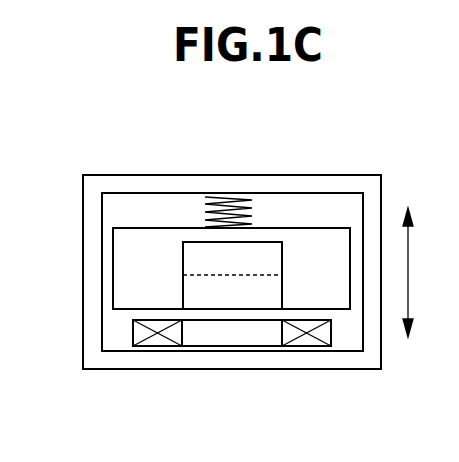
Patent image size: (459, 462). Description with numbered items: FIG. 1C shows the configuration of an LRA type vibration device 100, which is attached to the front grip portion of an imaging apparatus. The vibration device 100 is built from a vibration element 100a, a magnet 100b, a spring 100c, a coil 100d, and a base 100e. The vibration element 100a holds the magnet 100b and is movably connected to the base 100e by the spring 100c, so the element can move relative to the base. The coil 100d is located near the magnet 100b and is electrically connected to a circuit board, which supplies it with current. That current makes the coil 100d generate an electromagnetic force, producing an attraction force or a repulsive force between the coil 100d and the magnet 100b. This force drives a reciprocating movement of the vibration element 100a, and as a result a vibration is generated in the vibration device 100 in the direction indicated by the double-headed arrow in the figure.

The vibration device 100 is at (374, 146).
The vibration element 100a is at (140, 242).
The magnet 100b is at (283, 255).
The spring 100c is at (210, 210).
The coil 100d is at (307, 340).
The base 100e is at (83, 324).